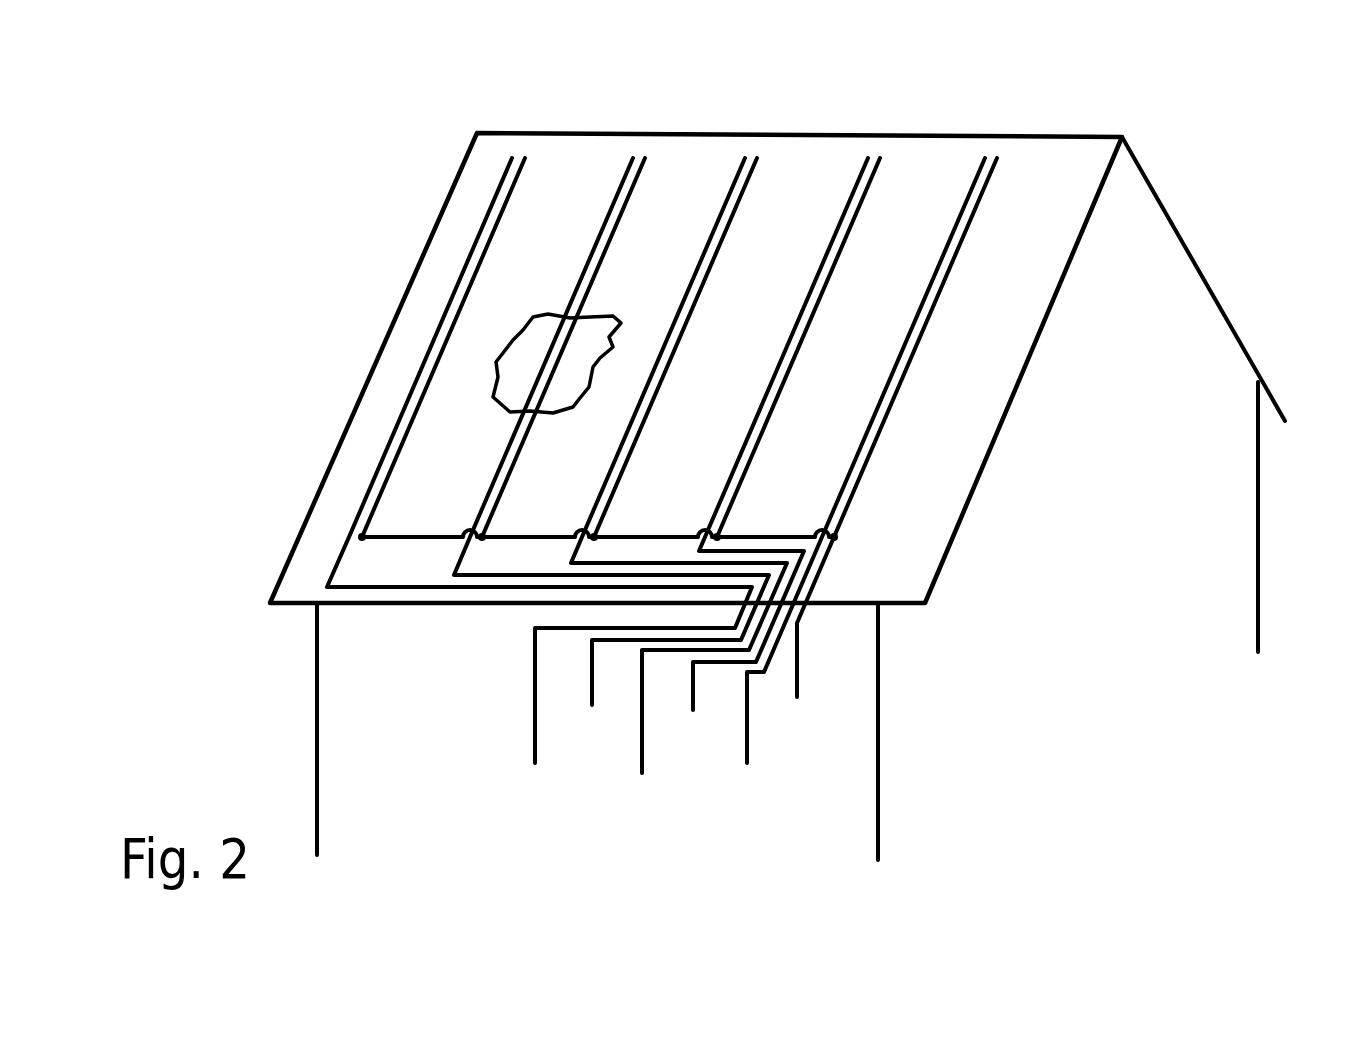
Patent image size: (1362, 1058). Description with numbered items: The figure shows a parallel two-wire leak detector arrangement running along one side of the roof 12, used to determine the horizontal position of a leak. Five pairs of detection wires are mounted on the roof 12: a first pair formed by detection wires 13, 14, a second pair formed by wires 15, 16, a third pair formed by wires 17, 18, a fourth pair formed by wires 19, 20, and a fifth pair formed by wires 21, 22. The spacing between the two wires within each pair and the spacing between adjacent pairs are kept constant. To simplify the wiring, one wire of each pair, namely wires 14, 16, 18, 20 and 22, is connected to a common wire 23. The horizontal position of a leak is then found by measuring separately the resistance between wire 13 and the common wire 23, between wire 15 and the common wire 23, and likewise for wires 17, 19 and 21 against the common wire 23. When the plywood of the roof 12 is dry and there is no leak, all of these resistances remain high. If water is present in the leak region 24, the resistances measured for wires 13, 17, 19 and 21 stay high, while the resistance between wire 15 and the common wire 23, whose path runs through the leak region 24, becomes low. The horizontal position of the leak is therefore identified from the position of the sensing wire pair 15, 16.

The roof 12 is at (937, 492).
The detection wire 13 is at (512, 150).
The detection wire 14 is at (533, 145).
The detection wire 15 is at (635, 145).
The detection wire 16 is at (653, 148).
The detection wire 17 is at (750, 148).
The detection wire 18 is at (762, 153).
The detection wire 19 is at (873, 148).
The detection wire 20 is at (892, 153).
The detection wire 21 is at (990, 157).
The detection wire 22 is at (1002, 158).
The common wire 23 is at (777, 530).
The leak region 24 is at (543, 312).